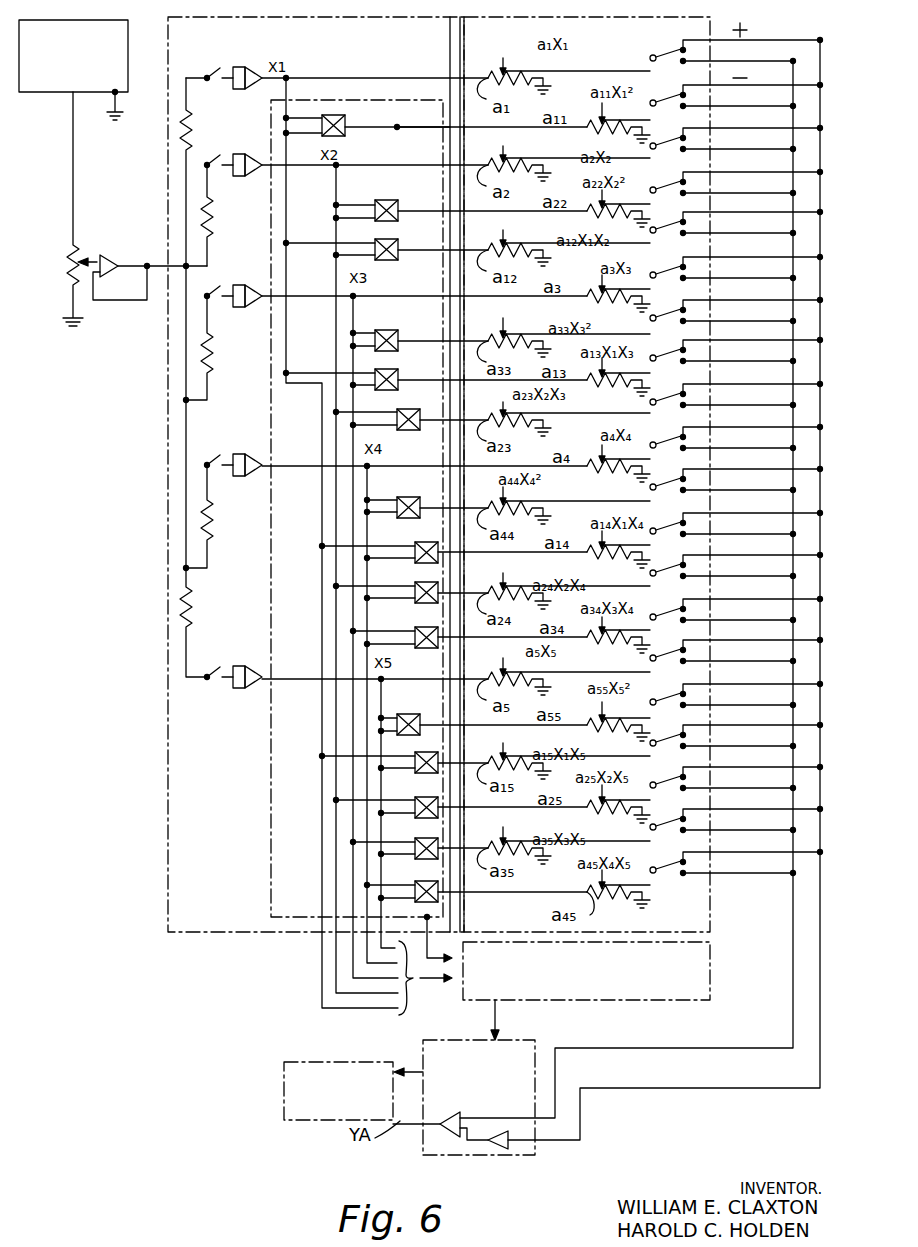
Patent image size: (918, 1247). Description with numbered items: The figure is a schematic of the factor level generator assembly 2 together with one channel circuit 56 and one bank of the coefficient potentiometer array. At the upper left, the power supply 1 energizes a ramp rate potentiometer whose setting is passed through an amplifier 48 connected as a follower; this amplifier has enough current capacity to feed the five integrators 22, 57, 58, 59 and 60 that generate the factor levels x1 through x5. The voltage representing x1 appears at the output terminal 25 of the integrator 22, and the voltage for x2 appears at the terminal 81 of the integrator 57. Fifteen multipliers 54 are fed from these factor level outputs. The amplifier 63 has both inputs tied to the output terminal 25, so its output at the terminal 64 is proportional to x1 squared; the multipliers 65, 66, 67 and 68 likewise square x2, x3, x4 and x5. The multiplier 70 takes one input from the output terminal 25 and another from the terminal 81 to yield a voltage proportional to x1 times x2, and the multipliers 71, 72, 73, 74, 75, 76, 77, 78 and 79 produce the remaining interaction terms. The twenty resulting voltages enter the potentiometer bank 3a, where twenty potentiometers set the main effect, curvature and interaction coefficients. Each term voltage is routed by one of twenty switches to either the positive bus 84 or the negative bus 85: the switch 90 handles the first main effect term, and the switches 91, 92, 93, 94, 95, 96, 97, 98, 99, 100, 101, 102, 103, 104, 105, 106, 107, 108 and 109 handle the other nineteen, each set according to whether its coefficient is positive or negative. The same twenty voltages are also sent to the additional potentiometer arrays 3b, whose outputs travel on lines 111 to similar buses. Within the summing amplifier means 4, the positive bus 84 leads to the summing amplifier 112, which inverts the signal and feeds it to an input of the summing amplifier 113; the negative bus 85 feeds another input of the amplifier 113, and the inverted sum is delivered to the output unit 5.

The power supply 1 is at (128, 50).
The factor level generator assembly 2 is at (310, 19).
The potentiometer bank 3a is at (589, 19).
The additional potentiometer array 3b is at (712, 952).
The summing amplifier means 4 is at (440, 1160).
The output unit 5 is at (357, 1062).
The integrator 22 is at (250, 66).
The output terminal 25 is at (290, 78).
The amplifier 48 is at (107, 257).
The multipliers 54 is at (393, 100).
The channel circuit 56 is at (448, 466).
The integrator 57 is at (251, 156).
The integrator 58 is at (252, 285).
The integrator 59 is at (253, 454).
The integrator 60 is at (253, 666).
The amplifier 63 is at (348, 119).
The terminal 64 is at (397, 129).
The multiplier 65 is at (397, 201).
The multiplier 66 is at (396, 331).
The multiplier 67 is at (403, 497).
The multiplier 68 is at (403, 714).
The multiplier 70 is at (399, 245).
The multiplier 71 is at (396, 370).
The multiplier 72 is at (405, 409).
The multiplier 73 is at (415, 542).
The multiplier 74 is at (415, 583).
The multiplier 75 is at (415, 628).
The multiplier 76 is at (415, 753).
The multiplier 77 is at (416, 797).
The multiplier 78 is at (416, 838).
The multiplier 79 is at (416, 881).
The terminal 81 is at (340, 164).
The positive bus 84 is at (787, 41).
The negative bus 85 is at (794, 74).
The switch 90 is at (682, 50).
The switch 91 is at (686, 95).
The switch 92 is at (686, 138).
The switch 93 is at (686, 182).
The switch 94 is at (686, 222).
The switch 95 is at (686, 267).
The switch 96 is at (686, 310).
The switch 97 is at (686, 350).
The switch 98 is at (686, 394).
The switch 99 is at (686, 437).
The switch 100 is at (686, 479).
The switch 101 is at (686, 523).
The switch 102 is at (686, 565).
The switch 103 is at (686, 609).
The switch 104 is at (686, 650).
The switch 105 is at (686, 694).
The switch 106 is at (686, 735).
The switch 107 is at (686, 777).
The switch 108 is at (686, 819).
The switch 109 is at (686, 862).
The lines 111 is at (498, 1010).
The summing amplifier 112 is at (489, 1152).
The summing amplifier 113 is at (426, 1134).